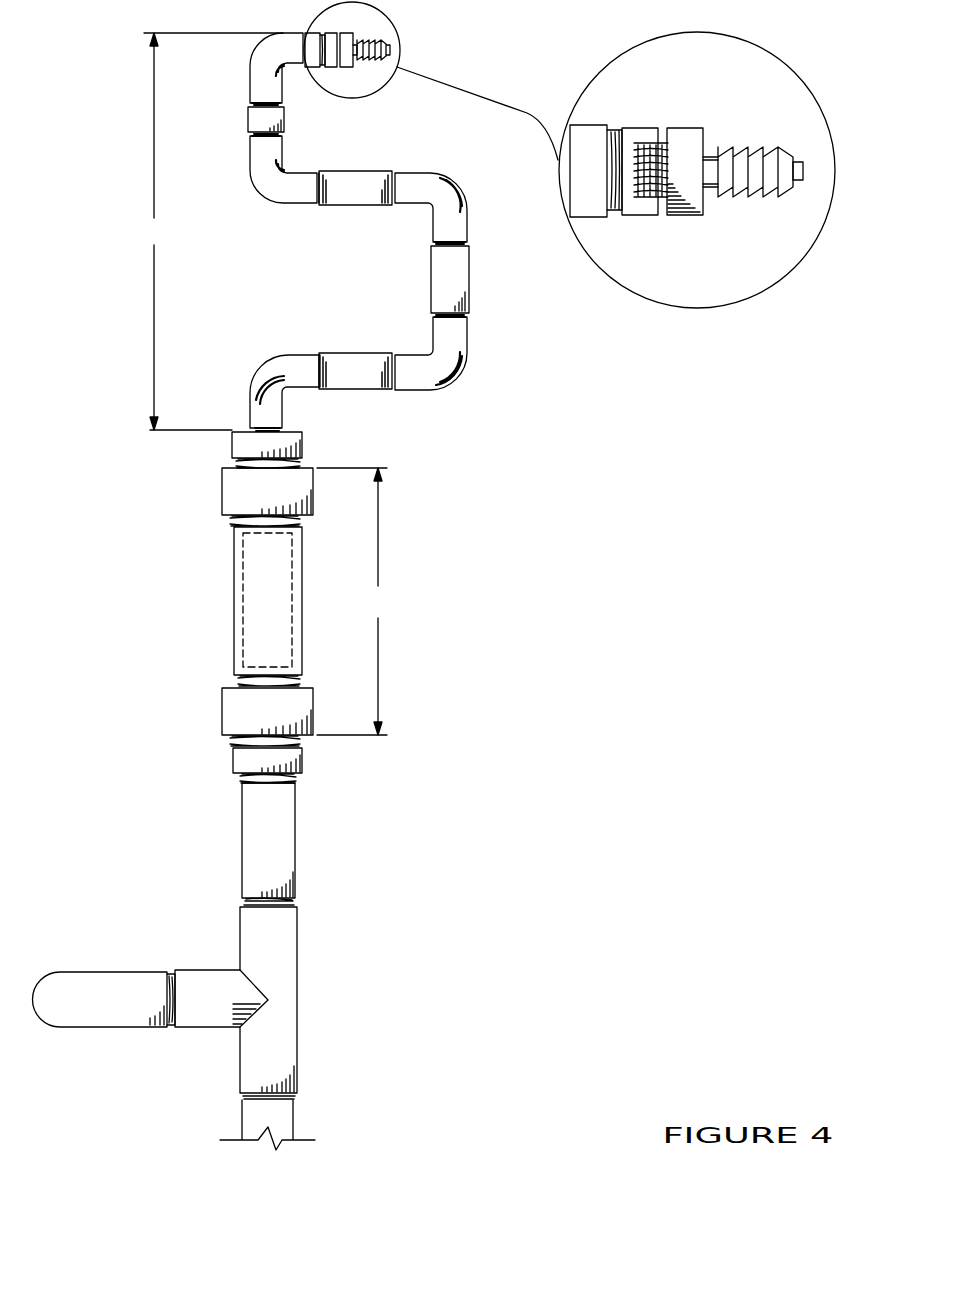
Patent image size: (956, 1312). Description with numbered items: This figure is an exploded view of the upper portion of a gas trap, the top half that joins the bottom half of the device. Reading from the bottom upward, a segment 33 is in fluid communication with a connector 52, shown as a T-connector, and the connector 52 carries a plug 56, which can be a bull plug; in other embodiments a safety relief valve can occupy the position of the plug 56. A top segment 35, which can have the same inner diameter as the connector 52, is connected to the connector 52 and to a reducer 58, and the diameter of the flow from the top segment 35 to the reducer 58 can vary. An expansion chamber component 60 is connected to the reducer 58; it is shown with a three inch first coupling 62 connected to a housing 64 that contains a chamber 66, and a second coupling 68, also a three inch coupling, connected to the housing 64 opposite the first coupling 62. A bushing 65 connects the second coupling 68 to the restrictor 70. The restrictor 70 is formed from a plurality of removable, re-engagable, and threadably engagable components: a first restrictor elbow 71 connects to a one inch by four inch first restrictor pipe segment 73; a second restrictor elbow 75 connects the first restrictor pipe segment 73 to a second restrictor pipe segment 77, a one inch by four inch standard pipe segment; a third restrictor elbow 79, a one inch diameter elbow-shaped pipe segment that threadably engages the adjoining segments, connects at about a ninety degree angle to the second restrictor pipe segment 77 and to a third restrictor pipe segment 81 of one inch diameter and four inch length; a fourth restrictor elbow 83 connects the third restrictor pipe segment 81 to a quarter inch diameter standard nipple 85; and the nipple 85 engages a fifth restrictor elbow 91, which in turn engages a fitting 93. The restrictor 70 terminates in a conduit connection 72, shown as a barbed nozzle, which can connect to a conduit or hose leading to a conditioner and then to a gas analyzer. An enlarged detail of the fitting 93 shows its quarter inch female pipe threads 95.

The segment 33 is at (287, 1117).
The top segment 35 is at (250, 835).
The connector 52 is at (290, 960).
The plug 56 is at (101, 985).
The reducer 58 is at (240, 758).
The expansion chamber component 60 is at (354, 601).
The first coupling 62 is at (230, 710).
The housing 64 is at (236, 627).
The chamber 66 is at (243, 562).
The bushing 65 is at (240, 440).
The second coupling 68 is at (230, 492).
The restrictor 70 is at (211, 231).
The first restrictor elbow 71 is at (258, 378).
The conduit connection 72 is at (790, 158).
The first restrictor pipe segment 73 is at (360, 367).
The second restrictor elbow 75 is at (437, 330).
The second restrictor pipe segment 77 is at (437, 285).
The third restrictor elbow 79 is at (437, 203).
The third restrictor pipe segment 81 is at (361, 183).
The fourth restrictor elbow 83 is at (270, 188).
The nipple 85 is at (258, 118).
The fifth restrictor elbow 91 is at (262, 60).
The fitting 93 is at (638, 133).
The female pipe threads 95 is at (640, 197).